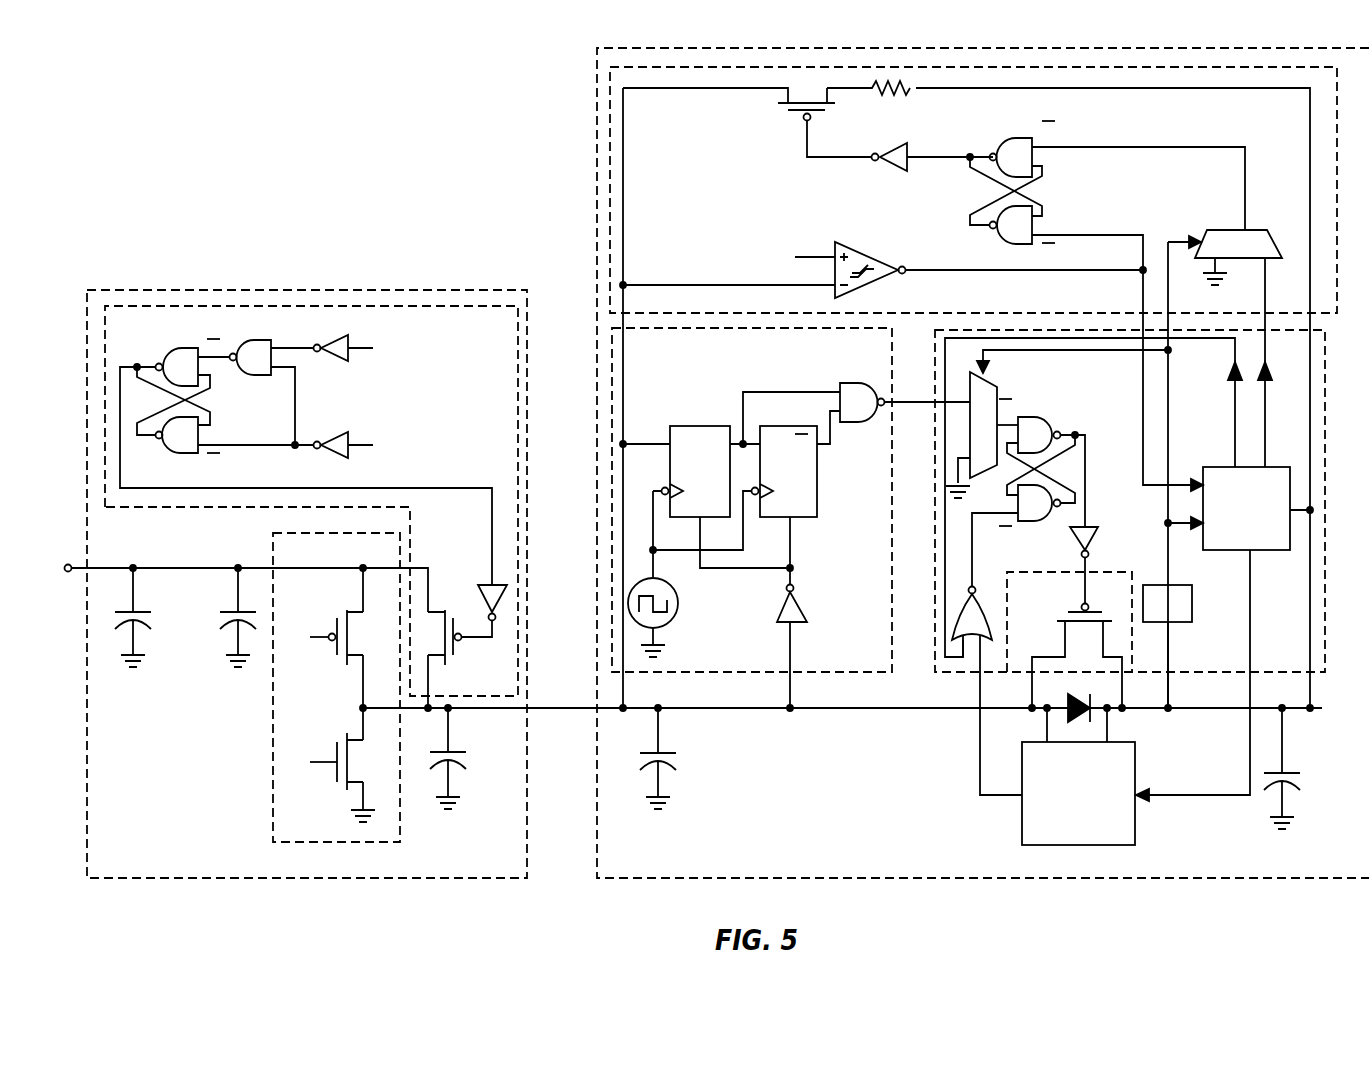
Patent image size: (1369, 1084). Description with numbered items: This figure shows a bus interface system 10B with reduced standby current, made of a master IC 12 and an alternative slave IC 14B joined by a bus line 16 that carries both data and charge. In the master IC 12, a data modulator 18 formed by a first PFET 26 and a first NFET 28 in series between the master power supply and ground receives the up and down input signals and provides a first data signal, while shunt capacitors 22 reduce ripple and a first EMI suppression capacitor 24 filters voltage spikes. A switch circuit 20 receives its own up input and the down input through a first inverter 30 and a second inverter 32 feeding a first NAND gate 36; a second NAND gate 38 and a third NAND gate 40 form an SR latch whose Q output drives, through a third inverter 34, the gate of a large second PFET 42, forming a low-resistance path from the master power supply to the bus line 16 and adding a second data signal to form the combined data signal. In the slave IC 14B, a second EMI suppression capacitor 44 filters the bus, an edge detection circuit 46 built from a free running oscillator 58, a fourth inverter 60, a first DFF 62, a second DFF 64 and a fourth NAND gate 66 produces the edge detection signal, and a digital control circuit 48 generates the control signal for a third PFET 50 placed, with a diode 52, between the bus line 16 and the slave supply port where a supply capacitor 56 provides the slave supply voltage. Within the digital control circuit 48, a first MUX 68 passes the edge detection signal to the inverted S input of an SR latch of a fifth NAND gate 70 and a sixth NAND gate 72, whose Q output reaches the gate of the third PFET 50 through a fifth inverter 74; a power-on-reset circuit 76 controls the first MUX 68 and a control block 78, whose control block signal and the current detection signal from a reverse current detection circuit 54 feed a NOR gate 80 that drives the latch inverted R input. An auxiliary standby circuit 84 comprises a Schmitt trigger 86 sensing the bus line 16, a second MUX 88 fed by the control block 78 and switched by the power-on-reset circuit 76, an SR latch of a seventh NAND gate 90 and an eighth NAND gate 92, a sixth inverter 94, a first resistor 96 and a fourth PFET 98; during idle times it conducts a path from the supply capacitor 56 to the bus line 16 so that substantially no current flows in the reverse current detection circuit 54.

The bus interface system 10B is at (480, 174).
The master IC 12 is at (674, 584).
The slave IC 14B is at (983, 463).
The bus line 16 is at (557, 713).
The data modulator 18 is at (336, 687).
The switch circuit 20 is at (311, 507).
The shunt capacitors 22 is at (222, 626).
The first EMI suppression capacitor 24 is at (462, 758).
The first PFET 26 is at (331, 638).
The first NFET 28 is at (331, 765).
The first inverter 30 is at (368, 359).
The second inverter 32 is at (360, 455).
The third inverter 34 is at (484, 599).
The first NAND gate 36 is at (255, 394).
The second NAND gate 38 is at (173, 386).
The third NAND gate 40 is at (225, 414).
The second PFET 42 is at (440, 659).
The second EMI suppression capacitor 44 is at (651, 758).
The edge detection circuit 46 is at (791, 518).
The digital control circuit 48 is at (1130, 587).
The third PFET 50 is at (1077, 656).
The diode 52 is at (1077, 696).
The reverse current detection circuit 54 is at (1136, 697).
The supply capacitor 56 is at (1289, 767).
The free running oscillator 58 is at (671, 617).
The fourth inverter 60 is at (805, 647).
The first DFF 62 is at (731, 484).
The second DFF 64 is at (796, 497).
The fourth NAND gate 66 is at (905, 403).
The first MUX 68 is at (968, 492).
The fifth NAND gate 70 is at (1049, 463).
The sixth NAND gate 72 is at (1023, 514).
The fifth inverter 74 is at (1097, 565).
The POR circuit 76 is at (1182, 646).
The control block 78 is at (1239, 508).
The NOR gate 80 is at (987, 691).
The auxiliary standby circuit 84 is at (973, 387).
The Schmitt trigger 86 is at (883, 267).
The second MUX 88 is at (1223, 454).
The seventh NAND gate 90 is at (1107, 175).
The eighth NAND gate 92 is at (1086, 328).
The sixth inverter 94 is at (933, 163).
The first resistor 96 is at (868, 107).
The fourth PFET 98 is at (747, 116).